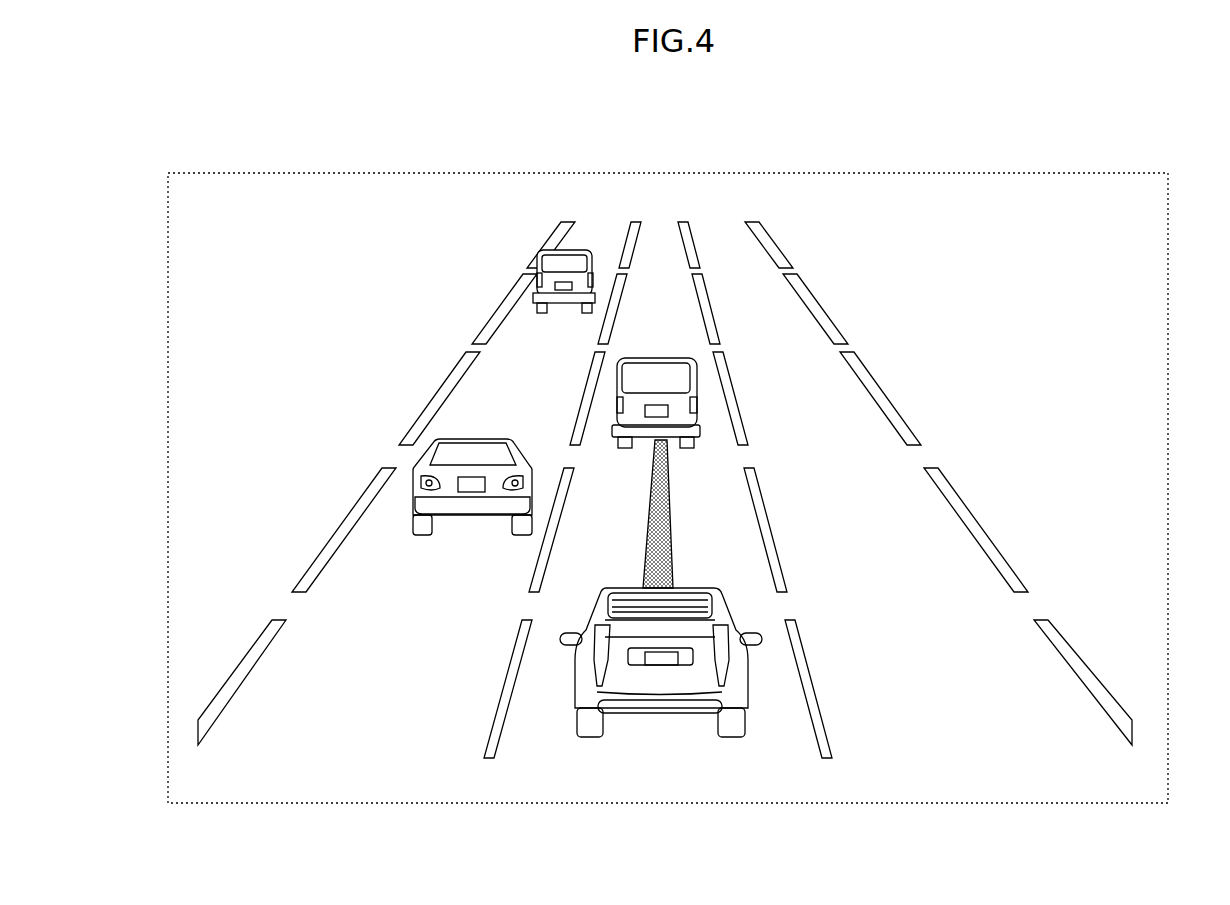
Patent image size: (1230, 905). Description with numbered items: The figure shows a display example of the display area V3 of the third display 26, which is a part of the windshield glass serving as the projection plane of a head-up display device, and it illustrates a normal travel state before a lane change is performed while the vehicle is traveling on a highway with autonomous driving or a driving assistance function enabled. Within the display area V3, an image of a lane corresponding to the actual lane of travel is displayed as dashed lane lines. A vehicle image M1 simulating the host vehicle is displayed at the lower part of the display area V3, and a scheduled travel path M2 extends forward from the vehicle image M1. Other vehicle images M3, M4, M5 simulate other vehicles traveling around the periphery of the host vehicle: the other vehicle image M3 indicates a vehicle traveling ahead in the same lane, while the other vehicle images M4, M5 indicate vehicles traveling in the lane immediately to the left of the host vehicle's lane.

The third display 26 is at (1102, 173).
The display area V3 is at (245, 224).
The vehicle image M1 is at (748, 698).
The scheduled travel path M2 is at (672, 518).
The other vehicle image M3 is at (648, 358).
The other vehicle image M4 is at (508, 440).
The other vehicle image M5 is at (579, 250).